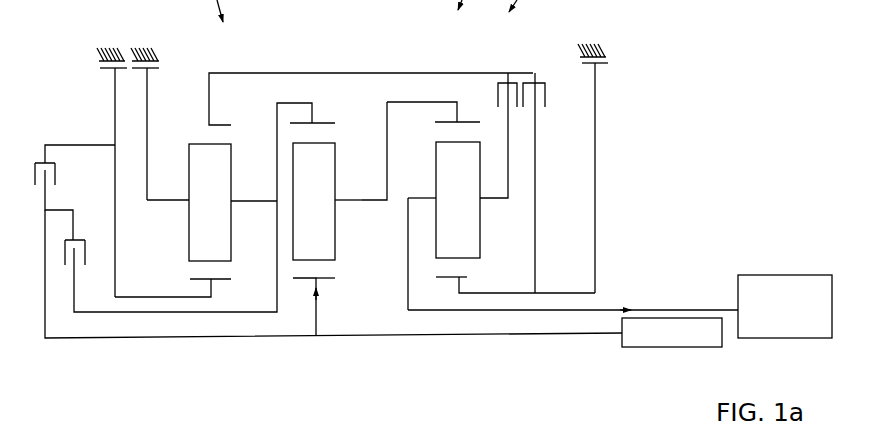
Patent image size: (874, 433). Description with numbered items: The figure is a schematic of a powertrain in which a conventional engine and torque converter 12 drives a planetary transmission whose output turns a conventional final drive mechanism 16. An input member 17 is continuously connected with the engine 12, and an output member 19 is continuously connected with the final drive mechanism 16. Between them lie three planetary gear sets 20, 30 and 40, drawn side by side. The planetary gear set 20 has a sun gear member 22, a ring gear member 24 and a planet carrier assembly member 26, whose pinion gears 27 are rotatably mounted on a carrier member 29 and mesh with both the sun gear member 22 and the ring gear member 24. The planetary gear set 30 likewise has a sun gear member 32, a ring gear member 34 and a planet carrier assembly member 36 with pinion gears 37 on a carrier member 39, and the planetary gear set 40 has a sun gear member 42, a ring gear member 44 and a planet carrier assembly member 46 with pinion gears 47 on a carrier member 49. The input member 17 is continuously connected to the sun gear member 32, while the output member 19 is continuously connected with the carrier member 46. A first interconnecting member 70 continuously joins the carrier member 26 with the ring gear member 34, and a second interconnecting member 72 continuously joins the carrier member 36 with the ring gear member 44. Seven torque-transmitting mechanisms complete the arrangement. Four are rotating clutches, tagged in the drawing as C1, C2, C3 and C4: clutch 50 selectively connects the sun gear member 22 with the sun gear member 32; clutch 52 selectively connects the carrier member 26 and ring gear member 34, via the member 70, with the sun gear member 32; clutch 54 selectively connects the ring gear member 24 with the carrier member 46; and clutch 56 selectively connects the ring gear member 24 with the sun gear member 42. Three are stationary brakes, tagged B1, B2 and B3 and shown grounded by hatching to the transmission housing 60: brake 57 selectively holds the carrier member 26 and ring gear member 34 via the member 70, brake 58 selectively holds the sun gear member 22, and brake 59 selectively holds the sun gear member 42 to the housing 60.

The transmission housing 60 is at (98, 47).
The first brake B1 is at (170, 122).
The second brake B2 is at (90, 170).
The third brake B3 is at (617, 169).
The first clutch C1 is at (64, 179).
The second clutch C2 is at (85, 268).
The third clutch C3 is at (498, 123).
The fourth clutch C4 is at (554, 183).
The brake 58 is at (97, 68).
The brake 57 is at (162, 68).
The brake 59 is at (610, 66).
The clutch 50 is at (57, 191).
The clutch 52 is at (70, 267).
The clutch 54 is at (500, 116).
The clutch 56 is at (540, 115).
The ring gear member 24 is at (197, 125).
The planet carrier assembly member 26 is at (238, 196).
The pinion gears 27 is at (210, 202).
The carrier member 29 is at (168, 200).
The planetary gear set 20 is at (204, 283).
The sun gear member 22 is at (217, 280).
The planetary gear set 30 is at (310, 283).
The sun gear member 32 is at (323, 280).
The ring gear member 34 is at (322, 125).
The planet carrier assembly member 36 is at (340, 196).
The pinion gears 37 is at (314, 201).
The carrier member 39 is at (362, 200).
The first interconnecting member 70 is at (306, 97).
The second interconnecting member 72 is at (446, 100).
The planetary gear set 40 is at (455, 285).
The sun gear member 42 is at (468, 278).
The ring gear member 44 is at (450, 122).
The planet carrier assembly member 46 is at (430, 191).
The pinion gears 47 is at (458, 200).
The carrier member 49 is at (412, 198).
The engine and torque converter 12 is at (683, 348).
The final drive mechanism 16 is at (788, 274).
The input member 17 is at (523, 335).
The output member 19 is at (610, 307).